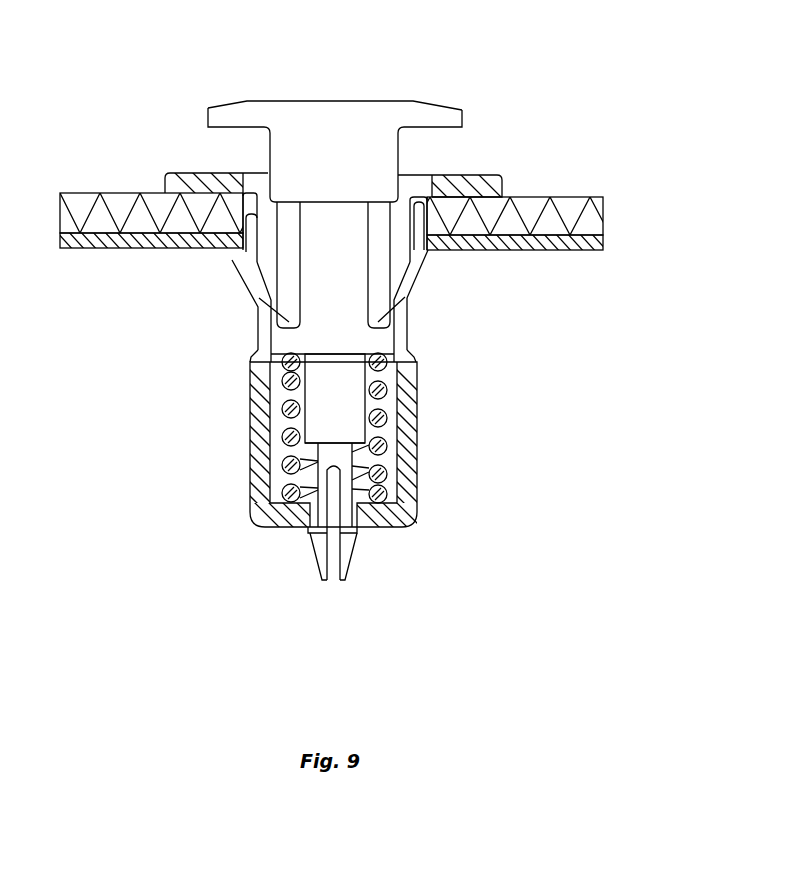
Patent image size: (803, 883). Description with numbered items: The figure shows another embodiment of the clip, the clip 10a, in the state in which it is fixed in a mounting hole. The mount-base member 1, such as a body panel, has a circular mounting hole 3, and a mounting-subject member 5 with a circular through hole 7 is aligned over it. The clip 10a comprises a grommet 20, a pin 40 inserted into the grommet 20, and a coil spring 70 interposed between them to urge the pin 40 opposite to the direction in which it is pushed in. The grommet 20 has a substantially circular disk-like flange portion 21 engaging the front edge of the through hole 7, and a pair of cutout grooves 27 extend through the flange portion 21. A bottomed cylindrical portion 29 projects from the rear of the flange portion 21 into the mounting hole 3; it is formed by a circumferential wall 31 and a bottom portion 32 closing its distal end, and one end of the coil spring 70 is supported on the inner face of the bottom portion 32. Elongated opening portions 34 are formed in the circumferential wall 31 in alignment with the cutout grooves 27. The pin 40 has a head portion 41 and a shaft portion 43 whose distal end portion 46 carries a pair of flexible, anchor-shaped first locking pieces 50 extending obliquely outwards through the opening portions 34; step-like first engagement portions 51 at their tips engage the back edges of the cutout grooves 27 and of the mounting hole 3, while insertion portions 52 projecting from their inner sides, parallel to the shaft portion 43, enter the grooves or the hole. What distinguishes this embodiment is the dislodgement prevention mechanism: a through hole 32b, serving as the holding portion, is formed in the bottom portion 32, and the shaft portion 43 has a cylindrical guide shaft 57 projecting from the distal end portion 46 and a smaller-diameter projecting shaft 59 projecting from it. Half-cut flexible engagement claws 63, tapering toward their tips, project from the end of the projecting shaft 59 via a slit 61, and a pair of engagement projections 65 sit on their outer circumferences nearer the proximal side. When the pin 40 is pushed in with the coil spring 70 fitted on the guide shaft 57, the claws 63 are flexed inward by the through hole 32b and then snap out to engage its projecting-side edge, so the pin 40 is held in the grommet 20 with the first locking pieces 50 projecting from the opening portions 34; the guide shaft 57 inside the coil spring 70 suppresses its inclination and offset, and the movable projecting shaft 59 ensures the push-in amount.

The mount-base member 1 is at (593, 250).
The mounting hole 3 is at (433, 245).
The mounting-subject member 5 is at (600, 230).
The through hole 7 is at (604, 200).
The clip 10a is at (507, 148).
The grommet 20 is at (531, 169).
The flange portion 21 is at (196, 173).
The cutout grooves 27 is at (243, 179).
The cylindrical portion 29 is at (243, 395).
The circumferential wall 31 is at (258, 440).
The bottom portion 32 is at (282, 523).
The through hole 32b is at (300, 528).
The opening portions 34 is at (250, 352).
The pin 40 is at (403, 89).
The head portion 41 is at (318, 102).
The shaft portion 43 is at (268, 260).
The distal end portion 46 is at (400, 370).
The first locking pieces 50 is at (258, 298).
The first engagement portions 51 is at (418, 240).
The insertion portions 52 is at (432, 269).
The guide shaft 57 is at (367, 413).
The projecting shaft 59 is at (342, 455).
The slit 61 is at (360, 527).
The engagement claws 63 is at (318, 566).
The engagement projections 65 is at (283, 490).
The coil spring 70 is at (357, 405).